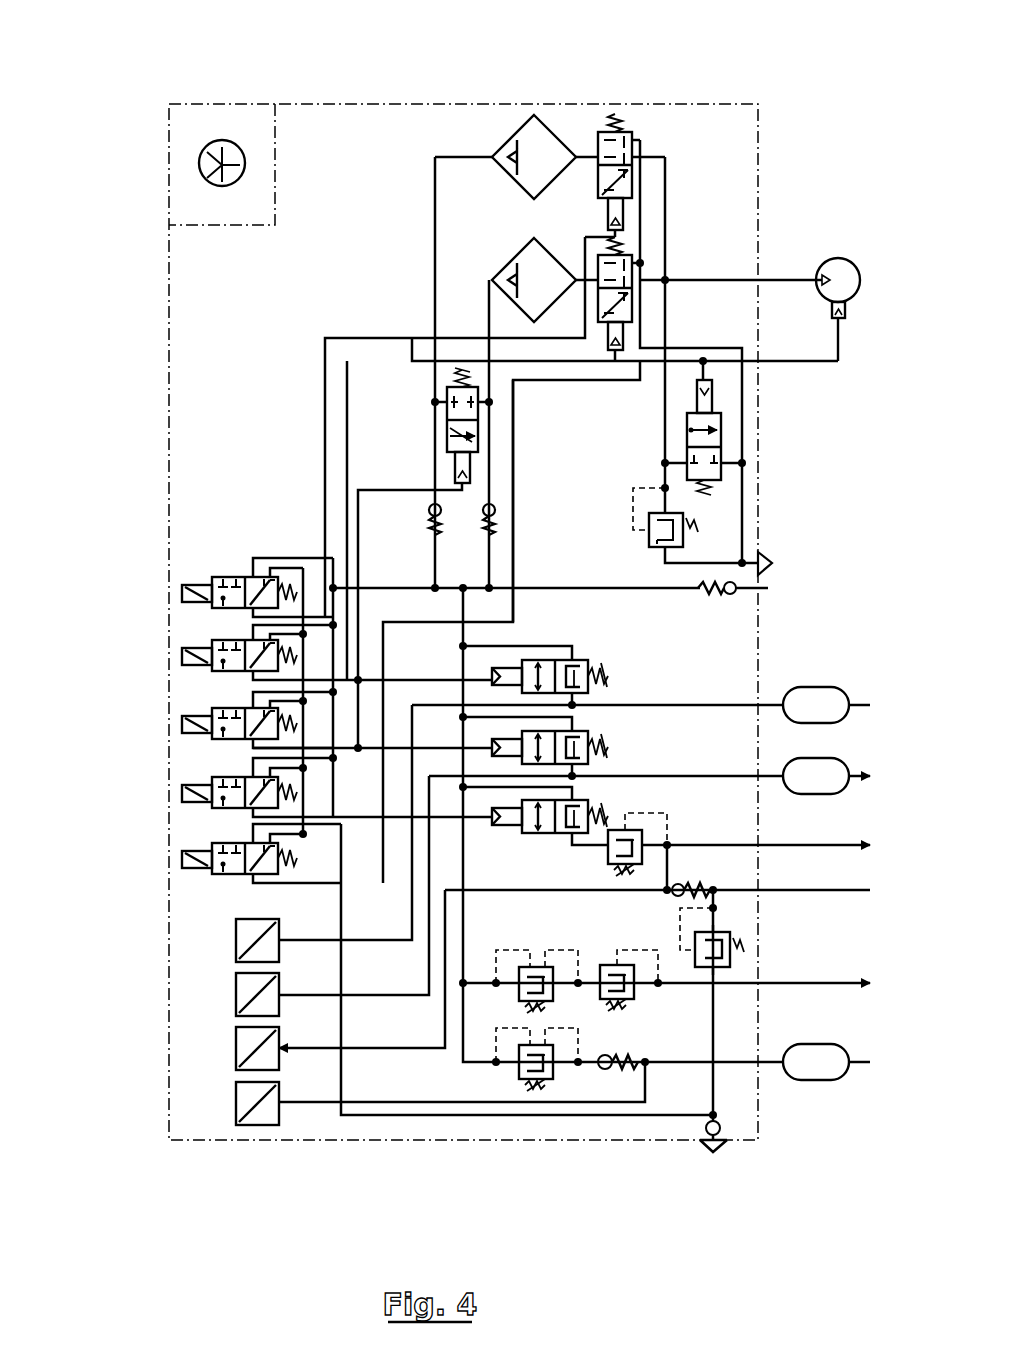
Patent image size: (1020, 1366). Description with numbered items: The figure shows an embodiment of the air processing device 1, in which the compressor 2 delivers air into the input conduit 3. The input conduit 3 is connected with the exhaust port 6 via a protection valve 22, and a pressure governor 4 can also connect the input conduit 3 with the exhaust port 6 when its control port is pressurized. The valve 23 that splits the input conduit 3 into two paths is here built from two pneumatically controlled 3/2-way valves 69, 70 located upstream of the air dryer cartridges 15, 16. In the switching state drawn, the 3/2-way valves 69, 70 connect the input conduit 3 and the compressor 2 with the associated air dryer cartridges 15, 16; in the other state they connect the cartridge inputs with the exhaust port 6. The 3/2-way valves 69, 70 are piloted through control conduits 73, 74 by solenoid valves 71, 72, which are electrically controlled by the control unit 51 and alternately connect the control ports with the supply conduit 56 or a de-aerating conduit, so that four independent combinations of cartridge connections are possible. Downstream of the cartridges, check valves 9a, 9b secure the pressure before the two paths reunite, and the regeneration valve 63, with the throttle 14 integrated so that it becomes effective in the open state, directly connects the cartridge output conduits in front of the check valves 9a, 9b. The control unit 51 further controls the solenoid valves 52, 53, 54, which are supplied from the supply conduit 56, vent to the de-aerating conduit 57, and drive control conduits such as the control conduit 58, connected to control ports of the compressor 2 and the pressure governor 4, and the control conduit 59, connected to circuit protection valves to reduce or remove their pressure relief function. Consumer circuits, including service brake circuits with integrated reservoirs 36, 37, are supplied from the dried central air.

The air processing device 1 is at (461, 92).
The compressor 2 is at (840, 280).
The input conduit 3 is at (783, 278).
The pressure governor 4 is at (725, 433).
The exhaust port 6 is at (776, 565).
The check valve 9a is at (427, 510).
The check valve 9b is at (497, 505).
The throttle 14 is at (460, 446).
The air dryer cartridge 15 is at (540, 148).
The air dryer cartridge 16 is at (537, 268).
The protection valve 22 is at (640, 552).
The valve 23 is at (618, 110).
The reservoir 36 is at (802, 717).
The reservoir 37 is at (802, 788).
The control unit 51 is at (232, 217).
The solenoid valve 52 is at (176, 857).
The solenoid valve 53 is at (176, 723).
The solenoid valve 54 is at (176, 790).
The supply conduit 56 is at (387, 586).
The de-aerating conduit 57 is at (400, 1117).
The control conduit 58 is at (577, 383).
The control conduit 59 is at (349, 752).
The regeneration valve 63 is at (445, 433).
The 3/2-way valve 69 is at (636, 124).
The 3/2-way valve 70 is at (634, 258).
The solenoid valve 71 is at (176, 592).
The solenoid valve 72 is at (176, 658).
The control conduit 73 is at (360, 338).
The control conduit 74 is at (411, 338).